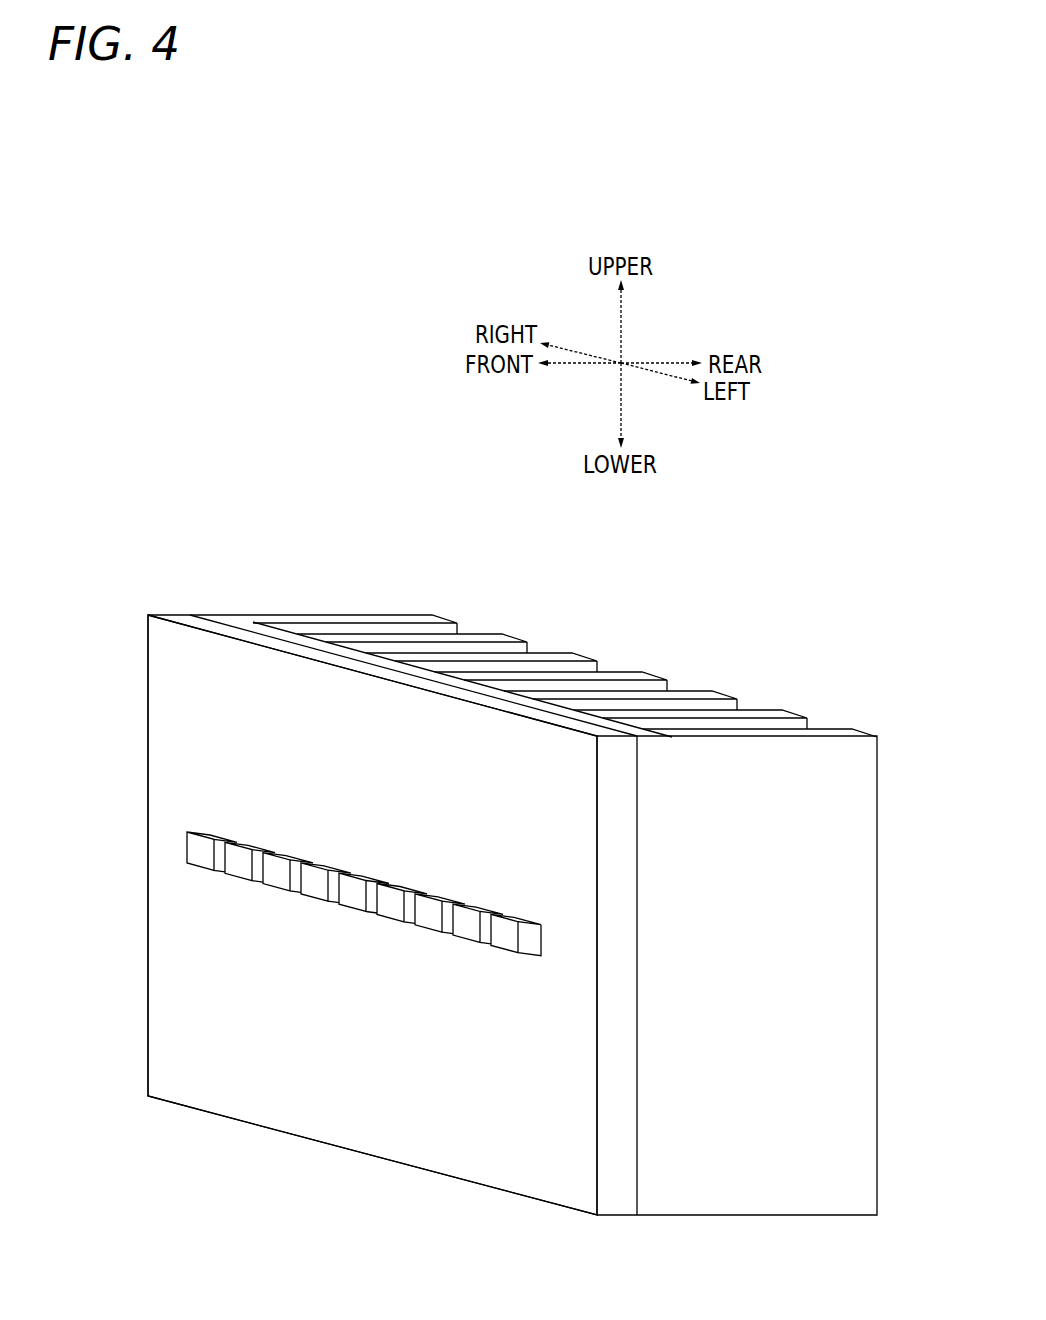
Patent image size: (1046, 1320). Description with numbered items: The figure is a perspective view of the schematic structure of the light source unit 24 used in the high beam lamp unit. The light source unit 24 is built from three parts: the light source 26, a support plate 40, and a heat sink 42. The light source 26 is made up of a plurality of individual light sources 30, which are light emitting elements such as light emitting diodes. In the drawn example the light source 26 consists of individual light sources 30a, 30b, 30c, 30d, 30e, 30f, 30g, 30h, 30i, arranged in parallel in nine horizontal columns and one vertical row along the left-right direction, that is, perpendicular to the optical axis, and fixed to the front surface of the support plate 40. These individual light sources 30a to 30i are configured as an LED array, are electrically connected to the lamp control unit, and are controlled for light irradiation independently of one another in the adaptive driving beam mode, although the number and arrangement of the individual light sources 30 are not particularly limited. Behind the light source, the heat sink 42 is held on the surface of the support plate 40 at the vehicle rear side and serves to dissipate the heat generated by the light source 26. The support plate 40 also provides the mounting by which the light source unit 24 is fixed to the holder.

The light source unit 24 is at (301, 570).
The support plate 40 is at (177, 690).
The heat sink 42 is at (693, 690).
The light source 26 is at (316, 933).
The individual light sources 30 is at (572, 846).
The individual light source 30a is at (201, 845).
The individual light source 30b is at (239, 855).
The individual light source 30c is at (277, 866).
The individual light source 30d is at (315, 876).
The individual light source 30e is at (353, 886).
The individual light source 30f is at (391, 897).
The individual light source 30g is at (429, 907).
The individual light source 30h is at (467, 917).
The individual light source 30i is at (505, 927).